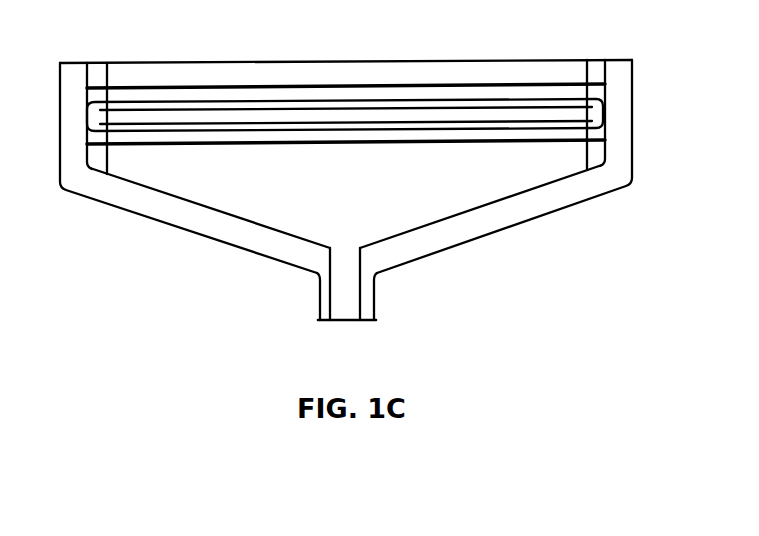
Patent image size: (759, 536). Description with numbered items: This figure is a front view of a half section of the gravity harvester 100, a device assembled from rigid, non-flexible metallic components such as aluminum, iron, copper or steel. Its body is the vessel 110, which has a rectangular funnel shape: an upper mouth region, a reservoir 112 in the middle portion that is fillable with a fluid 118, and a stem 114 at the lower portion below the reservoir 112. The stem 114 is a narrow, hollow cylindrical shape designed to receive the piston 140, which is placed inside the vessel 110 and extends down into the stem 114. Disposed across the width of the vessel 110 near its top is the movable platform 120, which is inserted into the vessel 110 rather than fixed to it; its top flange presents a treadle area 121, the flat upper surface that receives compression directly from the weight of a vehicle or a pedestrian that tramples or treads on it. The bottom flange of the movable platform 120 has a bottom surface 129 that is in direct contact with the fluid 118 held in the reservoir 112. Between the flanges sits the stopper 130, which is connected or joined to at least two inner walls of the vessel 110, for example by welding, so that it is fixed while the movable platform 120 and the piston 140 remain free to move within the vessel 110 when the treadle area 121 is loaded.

The gravity harvester 100 is at (390, 193).
The vessel 110 is at (637, 168).
The reservoir 112 is at (515, 177).
The stem 114 is at (377, 313).
The fluid 118 is at (475, 177).
The movable platform 120 is at (547, 77).
The treadle area 121 is at (433, 58).
The bottom surface 129 is at (372, 146).
The stopper 130 is at (607, 110).
The piston 140 is at (348, 323).